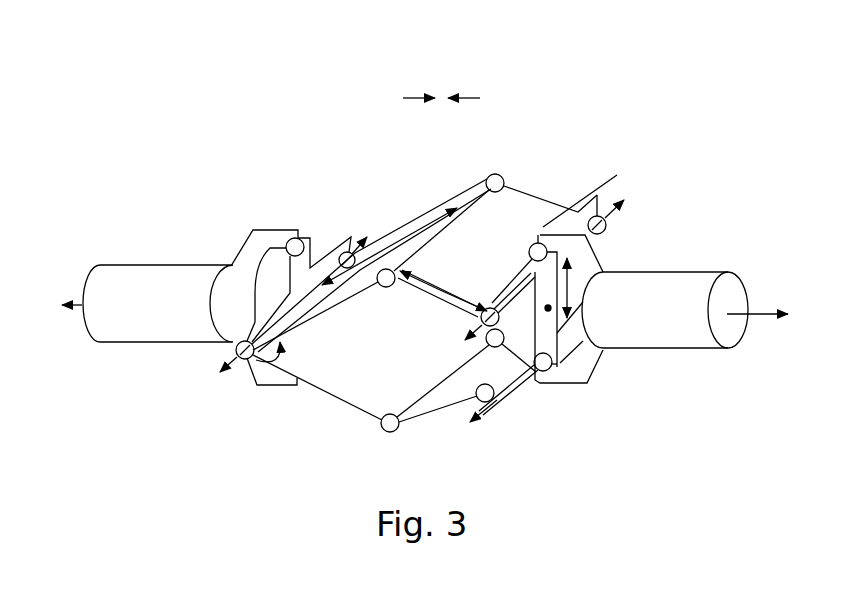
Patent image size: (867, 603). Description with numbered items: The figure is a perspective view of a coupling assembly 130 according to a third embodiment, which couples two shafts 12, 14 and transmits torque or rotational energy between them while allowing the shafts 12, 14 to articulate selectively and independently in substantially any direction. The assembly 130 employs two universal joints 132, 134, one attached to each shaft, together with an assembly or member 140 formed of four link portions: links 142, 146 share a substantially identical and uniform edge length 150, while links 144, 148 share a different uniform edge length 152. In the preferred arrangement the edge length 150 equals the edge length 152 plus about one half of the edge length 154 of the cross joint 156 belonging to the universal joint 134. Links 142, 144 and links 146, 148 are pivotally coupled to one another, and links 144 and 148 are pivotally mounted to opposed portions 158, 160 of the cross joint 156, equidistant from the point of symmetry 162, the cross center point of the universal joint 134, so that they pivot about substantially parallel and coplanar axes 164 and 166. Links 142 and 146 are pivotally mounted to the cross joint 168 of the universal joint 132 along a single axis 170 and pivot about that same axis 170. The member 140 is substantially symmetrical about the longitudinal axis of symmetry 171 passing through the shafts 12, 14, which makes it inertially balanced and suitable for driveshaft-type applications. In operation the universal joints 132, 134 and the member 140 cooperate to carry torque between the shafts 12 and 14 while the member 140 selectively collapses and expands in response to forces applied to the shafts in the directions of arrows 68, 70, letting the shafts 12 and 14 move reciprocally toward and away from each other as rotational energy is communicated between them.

The shaft 12 is at (141, 265).
The shaft 14 is at (703, 272).
The arrow 68 is at (415, 98).
The arrow 70 is at (470, 98).
The coupling assembly 130 is at (135, 187).
The universal joint 132 is at (252, 226).
The universal joint 134 is at (587, 384).
The member 140 is at (240, 382).
The link 142 is at (384, 238).
The link 144 is at (498, 174).
The link 146 is at (357, 405).
The link 148 is at (438, 405).
The edge length 150 is at (425, 230).
The edge length 152 is at (455, 290).
The edge length 154 is at (570, 298).
The cross joint 156 is at (600, 194).
The opposed portion 158 is at (503, 280).
The opposed portion 160 is at (503, 400).
The point of symmetry 162 is at (550, 312).
The axis 164 is at (523, 377).
The axis 166 is at (477, 420).
The cross joint 168 is at (328, 257).
The axis 170 is at (236, 353).
The longitudinal axis of symmetry 171 is at (757, 317).